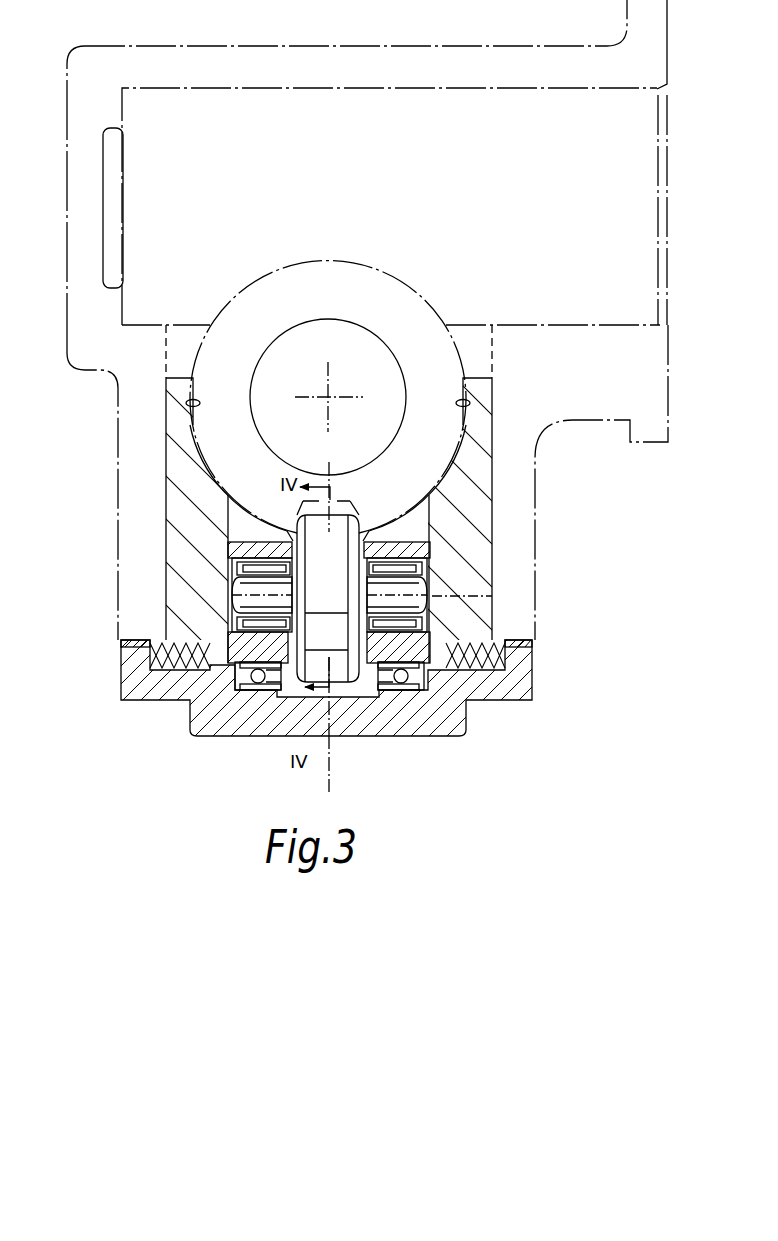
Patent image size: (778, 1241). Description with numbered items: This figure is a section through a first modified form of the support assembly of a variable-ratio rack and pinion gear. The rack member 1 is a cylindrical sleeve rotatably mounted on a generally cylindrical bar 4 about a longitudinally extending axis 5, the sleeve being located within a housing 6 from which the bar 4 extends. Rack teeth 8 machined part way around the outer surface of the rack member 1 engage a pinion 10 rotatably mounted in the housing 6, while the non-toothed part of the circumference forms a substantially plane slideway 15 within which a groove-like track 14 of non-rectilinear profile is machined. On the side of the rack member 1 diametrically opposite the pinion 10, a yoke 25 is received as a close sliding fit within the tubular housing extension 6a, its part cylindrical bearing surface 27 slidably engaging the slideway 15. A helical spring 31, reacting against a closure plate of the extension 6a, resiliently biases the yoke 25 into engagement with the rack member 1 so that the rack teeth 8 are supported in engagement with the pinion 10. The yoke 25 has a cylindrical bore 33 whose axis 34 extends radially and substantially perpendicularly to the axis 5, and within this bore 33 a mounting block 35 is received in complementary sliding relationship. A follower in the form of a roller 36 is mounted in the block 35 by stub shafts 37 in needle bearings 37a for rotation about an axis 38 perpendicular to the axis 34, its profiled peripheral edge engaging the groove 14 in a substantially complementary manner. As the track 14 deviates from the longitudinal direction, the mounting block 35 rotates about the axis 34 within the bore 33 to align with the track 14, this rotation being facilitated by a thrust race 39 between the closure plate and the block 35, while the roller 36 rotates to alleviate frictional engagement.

The rack member 1 is at (182, 58).
The bar 4 is at (301, 376).
The axis 5 is at (330, 400).
The housing 6 is at (75, 287).
The housing extension 6a is at (533, 455).
The rack teeth 8 is at (287, 272).
The pinion 10 is at (152, 170).
The track 14 is at (343, 503).
The slideway 15 is at (185, 420).
The yoke 25 is at (178, 507).
The part cylindrical bearing surface 27 is at (196, 403).
The helical spring 31 is at (168, 657).
The cylindrical bore 33 is at (228, 523).
The axis of bore 34 is at (329, 752).
The mounting block 35 is at (240, 645).
The roller 36 is at (341, 610).
The stub shafts 37 is at (245, 594).
The needle bearings 37a is at (233, 567).
The roller axis 38 is at (452, 596).
The thrust race 39 is at (262, 692).